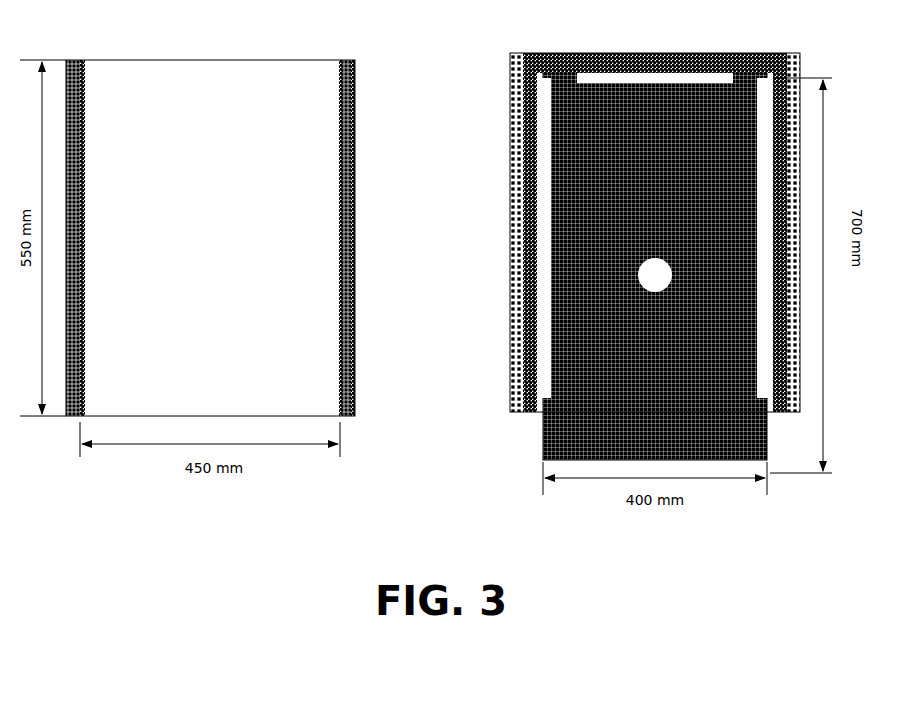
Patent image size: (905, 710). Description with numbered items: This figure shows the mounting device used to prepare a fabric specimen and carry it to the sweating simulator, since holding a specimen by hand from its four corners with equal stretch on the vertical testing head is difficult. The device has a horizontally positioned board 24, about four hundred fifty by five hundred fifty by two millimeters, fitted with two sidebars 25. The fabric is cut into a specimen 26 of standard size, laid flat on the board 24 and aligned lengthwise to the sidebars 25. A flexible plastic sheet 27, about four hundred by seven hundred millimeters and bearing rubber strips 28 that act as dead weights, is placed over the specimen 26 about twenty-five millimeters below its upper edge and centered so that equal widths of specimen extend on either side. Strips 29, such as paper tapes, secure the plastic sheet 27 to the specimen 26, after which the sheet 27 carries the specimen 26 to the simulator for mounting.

The board 24 is at (508, 220).
The sidebars 25 is at (82, 72).
The specimen 26 is at (542, 63).
The flexible plastic sheet 27 is at (607, 134).
The rubber strips 28 is at (655, 430).
The strips 29 is at (766, 96).